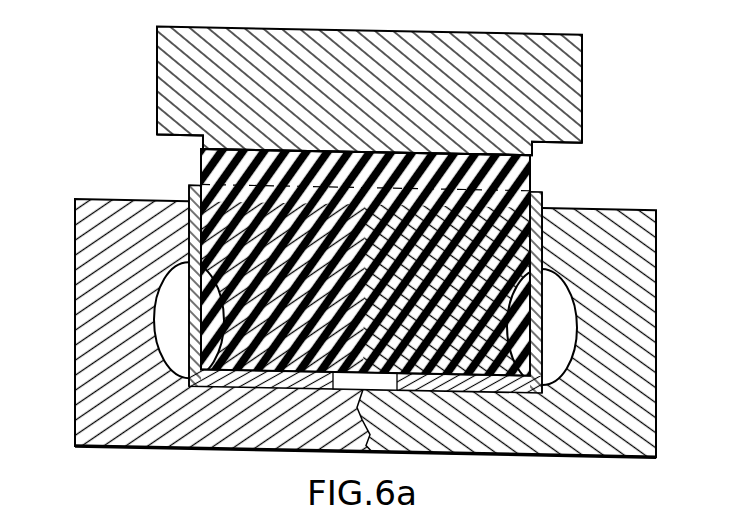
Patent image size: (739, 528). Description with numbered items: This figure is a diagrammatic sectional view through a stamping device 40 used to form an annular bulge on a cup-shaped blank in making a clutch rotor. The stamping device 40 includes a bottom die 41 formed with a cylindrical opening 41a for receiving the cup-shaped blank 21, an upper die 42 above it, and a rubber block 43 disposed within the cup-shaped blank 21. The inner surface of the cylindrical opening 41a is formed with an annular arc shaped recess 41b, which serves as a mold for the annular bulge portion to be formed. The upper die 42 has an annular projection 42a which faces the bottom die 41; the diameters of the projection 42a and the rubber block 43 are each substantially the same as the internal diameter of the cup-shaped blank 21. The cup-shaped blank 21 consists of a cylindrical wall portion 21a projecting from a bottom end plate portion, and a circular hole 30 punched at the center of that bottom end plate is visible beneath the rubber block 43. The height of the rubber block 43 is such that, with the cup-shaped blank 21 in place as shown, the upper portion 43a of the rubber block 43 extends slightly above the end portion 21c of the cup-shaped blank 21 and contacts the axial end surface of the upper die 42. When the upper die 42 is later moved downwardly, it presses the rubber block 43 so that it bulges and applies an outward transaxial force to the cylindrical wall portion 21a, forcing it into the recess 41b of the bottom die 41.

The stamping device 40 is at (338, 239).
The upper die 42 is at (394, 94).
The annular projection 42a is at (536, 144).
The bottom die 41 is at (338, 327).
The cylindrical opening 41a is at (537, 229).
The annular arc shaped recess 41b is at (537, 309).
The cup-shaped blank 21 is at (309, 275).
The cylindrical wall portion 21a is at (188, 320).
The end portion 21c is at (540, 184).
The rubber block 43 is at (328, 257).
The upper portion 43a is at (201, 166).
The circular hole 30 is at (350, 388).